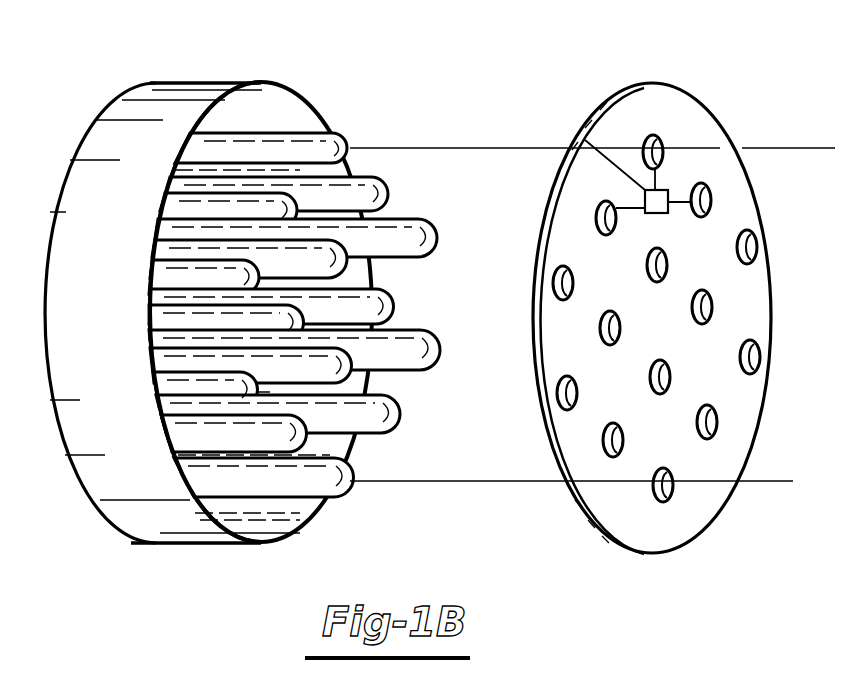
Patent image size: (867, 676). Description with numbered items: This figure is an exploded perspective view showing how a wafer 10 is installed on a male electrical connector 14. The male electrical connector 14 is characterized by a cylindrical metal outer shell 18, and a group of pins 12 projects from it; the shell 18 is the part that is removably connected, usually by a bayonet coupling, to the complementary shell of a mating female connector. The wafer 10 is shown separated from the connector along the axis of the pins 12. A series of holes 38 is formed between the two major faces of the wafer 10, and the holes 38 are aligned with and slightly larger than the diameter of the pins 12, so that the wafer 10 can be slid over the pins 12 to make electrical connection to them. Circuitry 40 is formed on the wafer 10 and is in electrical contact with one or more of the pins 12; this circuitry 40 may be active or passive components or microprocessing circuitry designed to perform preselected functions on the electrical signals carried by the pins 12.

The wafer 10 is at (680, 105).
The pins 12 is at (378, 196).
The male electrical connector 14 is at (157, 82).
The cylindrical metal outer shell 18 is at (167, 534).
The holes 38 is at (753, 342).
The circuitry 40 is at (668, 192).